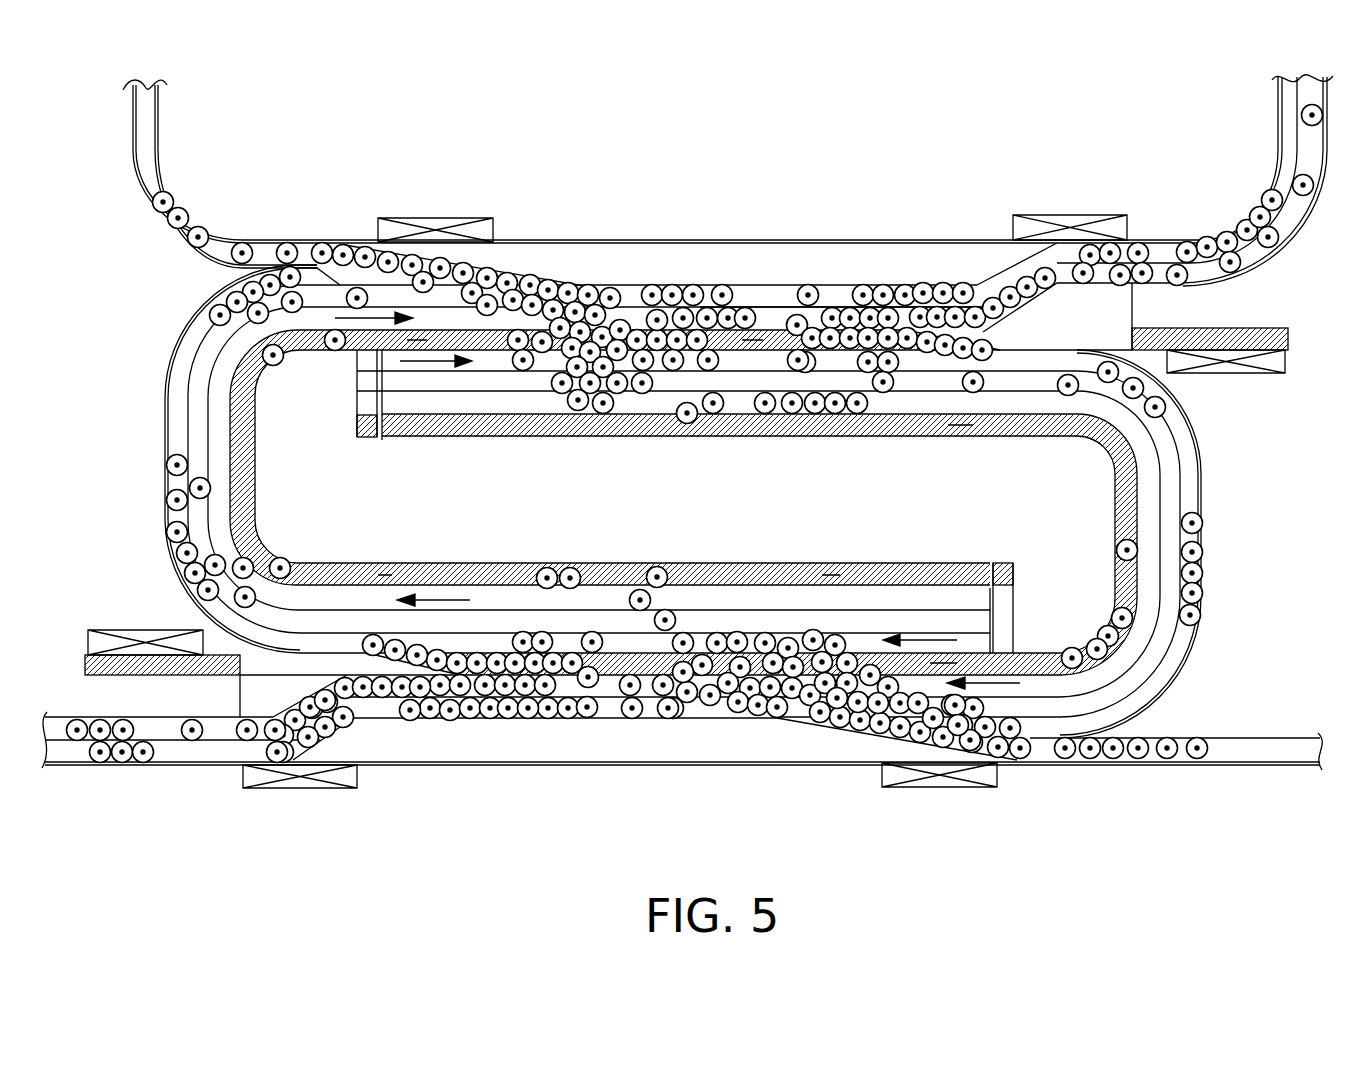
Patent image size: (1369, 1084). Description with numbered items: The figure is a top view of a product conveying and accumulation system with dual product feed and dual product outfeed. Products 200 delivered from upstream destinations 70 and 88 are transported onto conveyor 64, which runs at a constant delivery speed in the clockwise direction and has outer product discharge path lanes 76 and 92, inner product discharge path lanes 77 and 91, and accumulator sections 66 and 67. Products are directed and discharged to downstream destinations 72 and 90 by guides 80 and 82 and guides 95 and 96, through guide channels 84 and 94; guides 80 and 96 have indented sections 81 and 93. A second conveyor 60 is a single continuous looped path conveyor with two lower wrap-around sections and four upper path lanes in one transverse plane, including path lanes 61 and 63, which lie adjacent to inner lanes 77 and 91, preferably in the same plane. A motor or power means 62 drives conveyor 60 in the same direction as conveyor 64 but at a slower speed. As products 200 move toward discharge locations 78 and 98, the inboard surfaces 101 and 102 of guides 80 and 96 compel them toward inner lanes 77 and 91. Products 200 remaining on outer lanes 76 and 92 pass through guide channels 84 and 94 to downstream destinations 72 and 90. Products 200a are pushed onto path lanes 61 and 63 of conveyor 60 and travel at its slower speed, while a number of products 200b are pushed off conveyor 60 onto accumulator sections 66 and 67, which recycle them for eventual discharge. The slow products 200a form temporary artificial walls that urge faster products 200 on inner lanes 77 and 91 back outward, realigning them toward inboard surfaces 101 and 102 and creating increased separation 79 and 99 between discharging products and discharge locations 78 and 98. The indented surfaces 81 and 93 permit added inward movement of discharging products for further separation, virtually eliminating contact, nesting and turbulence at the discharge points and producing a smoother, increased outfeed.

The second conveyor 60 is at (1280, 328).
The path lane 61 is at (768, 337).
The motor or power means 62 is at (1283, 362).
The path lane 63 is at (645, 737).
The conveyor 64 is at (313, 278).
The accumulator section 66 is at (1160, 458).
The accumulator section 67 is at (198, 407).
The upstream destination 70 is at (143, 137).
The downstream destination 72 is at (1290, 107).
The outer product discharge path lane 76 is at (752, 293).
The inner product discharge path lane 77 is at (817, 313).
The discharge location 78 is at (923, 283).
The separation 79 is at (905, 307).
The guide 80 is at (975, 263).
The indented section 81 is at (933, 283).
The guide 82 is at (1095, 305).
The guide channel 84 is at (1065, 272).
The upstream destination 88 is at (1275, 750).
The downstream destination 90 is at (177, 750).
The inner product discharge path lane 91 is at (607, 725).
The outer product discharge path lane 92 is at (710, 700).
The indented section 93 is at (430, 735).
The guide channel 94 is at (290, 748).
The guide 95 is at (267, 694).
The guide 96 is at (363, 740).
The discharge location 98 is at (457, 735).
The separation 99 is at (487, 740).
The inboard surface 101 is at (737, 285).
The inboard surface 102 is at (630, 735).
The products 200 is at (617, 288).
The products 200a is at (907, 348).
The products 200b is at (810, 372).